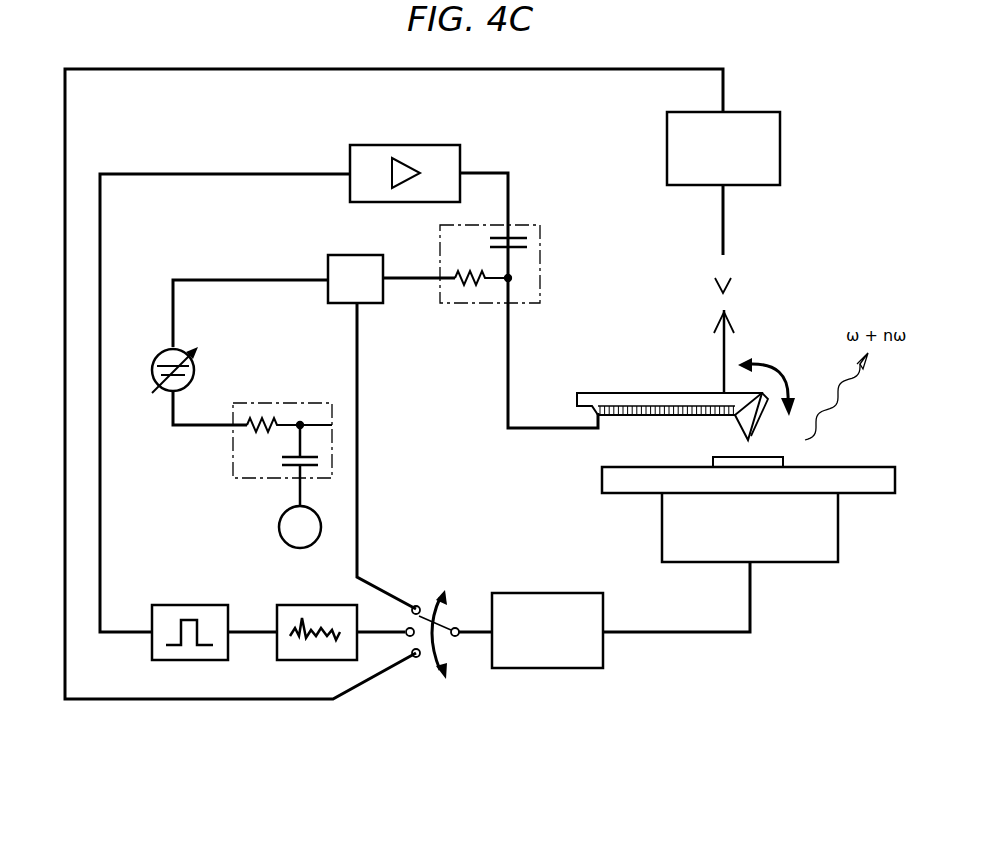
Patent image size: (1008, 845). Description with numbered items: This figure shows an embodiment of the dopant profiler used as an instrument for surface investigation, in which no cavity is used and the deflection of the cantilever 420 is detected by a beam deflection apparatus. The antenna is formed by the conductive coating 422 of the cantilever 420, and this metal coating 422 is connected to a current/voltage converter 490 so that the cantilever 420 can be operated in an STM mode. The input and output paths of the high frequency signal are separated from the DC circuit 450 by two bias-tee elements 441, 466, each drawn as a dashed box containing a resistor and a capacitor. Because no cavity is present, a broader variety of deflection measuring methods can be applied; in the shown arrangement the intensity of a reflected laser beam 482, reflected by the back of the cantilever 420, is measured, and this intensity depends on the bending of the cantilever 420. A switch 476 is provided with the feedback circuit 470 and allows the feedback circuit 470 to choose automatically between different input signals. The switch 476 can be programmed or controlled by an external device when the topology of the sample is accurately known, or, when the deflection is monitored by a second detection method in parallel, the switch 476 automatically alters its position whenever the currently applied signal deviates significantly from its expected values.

The current/voltage converter 490 is at (336, 255).
The bias-tee element 466 is at (528, 225).
The reflected laser beam 482 is at (723, 233).
The cantilever 420 is at (700, 362).
The conductive coating 422 is at (679, 415).
The DC circuit 450 is at (197, 425).
The bias-tee element 441 is at (260, 478).
The switch 476 is at (418, 659).
The feedback circuit 470 is at (540, 668).